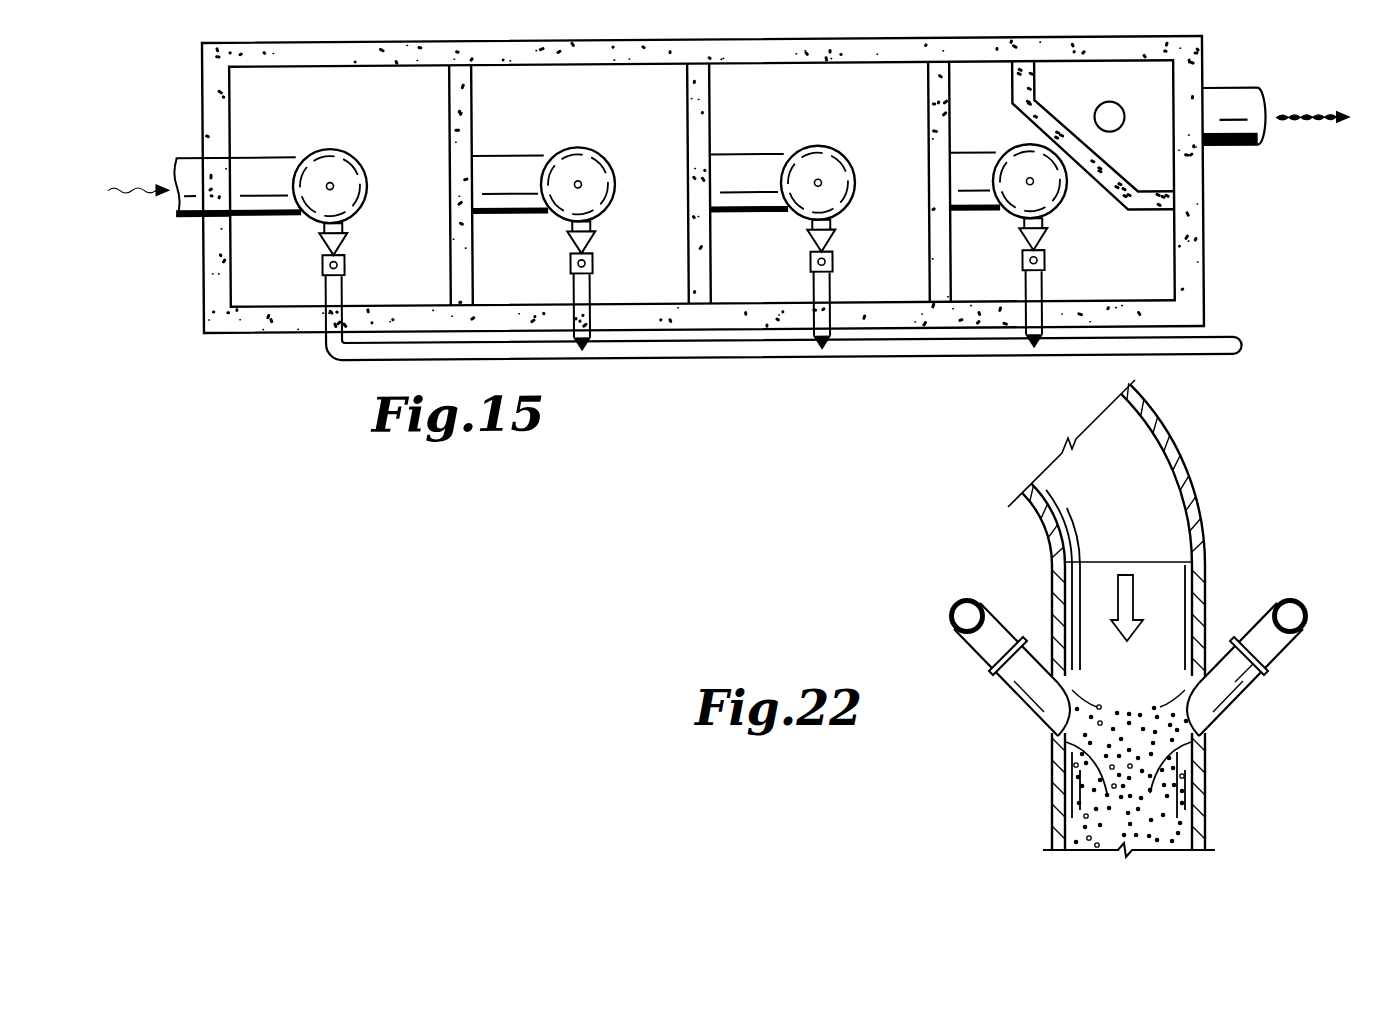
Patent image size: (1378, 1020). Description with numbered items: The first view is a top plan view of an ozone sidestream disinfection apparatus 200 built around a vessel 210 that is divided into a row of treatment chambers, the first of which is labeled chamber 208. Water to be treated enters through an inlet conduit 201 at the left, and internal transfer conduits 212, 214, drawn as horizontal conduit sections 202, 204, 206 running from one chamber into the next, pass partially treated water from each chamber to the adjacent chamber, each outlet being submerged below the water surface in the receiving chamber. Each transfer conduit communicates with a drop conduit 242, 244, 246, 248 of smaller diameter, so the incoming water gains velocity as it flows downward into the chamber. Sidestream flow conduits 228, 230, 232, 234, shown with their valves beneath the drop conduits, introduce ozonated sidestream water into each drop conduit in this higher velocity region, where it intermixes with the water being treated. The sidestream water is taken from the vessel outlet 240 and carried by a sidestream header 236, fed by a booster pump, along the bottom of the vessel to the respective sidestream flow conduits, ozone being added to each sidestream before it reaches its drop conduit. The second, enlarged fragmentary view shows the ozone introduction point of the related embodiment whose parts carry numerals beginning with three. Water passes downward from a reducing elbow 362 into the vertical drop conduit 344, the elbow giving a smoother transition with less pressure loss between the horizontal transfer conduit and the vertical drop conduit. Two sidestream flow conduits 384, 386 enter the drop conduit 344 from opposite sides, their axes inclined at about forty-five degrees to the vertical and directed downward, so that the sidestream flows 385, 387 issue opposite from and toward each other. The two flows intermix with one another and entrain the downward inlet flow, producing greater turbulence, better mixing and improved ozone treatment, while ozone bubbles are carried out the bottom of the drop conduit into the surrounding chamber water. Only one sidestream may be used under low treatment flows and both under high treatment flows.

In FIG. 15, the filtration system 200 is at (270, 364).
In FIG. 15, the inlet conduit 201 is at (185, 168).
In FIG. 15, the transfer conduit 202 is at (510, 144).
In FIG. 15, the transfer conduit 204 is at (738, 169).
In FIG. 15, the transfer conduit 206 is at (985, 145).
In FIG. 15, the first chamber 208 is at (253, 82).
In FIG. 15, the vessel 210 is at (490, 80).
In FIG. 15, the internal transfer conduit 212 is at (730, 82).
In FIG. 15, the internal transfer conduit 214 is at (968, 83).
In FIG. 15, the sidestream flow conduit 228 is at (344, 291).
In FIG. 15, the sidestream flow conduit 230 is at (590, 293).
In FIG. 15, the sidestream flow conduit 232 is at (830, 294).
In FIG. 15, the sidestream flow conduit 234 is at (1042, 296).
In FIG. 15, the sidestream header 236 is at (1213, 352).
In FIG. 15, the vessel outlet 240 is at (1222, 105).
In FIG. 15, the drop conduit 242 is at (359, 170).
In FIG. 15, the drop conduit 244 is at (607, 173).
In FIG. 15, the drop conduit 246 is at (846, 174).
In FIG. 15, the drop conduit 248 is at (1058, 211).
In FIG. 22, the drop conduit 344 is at (1208, 810).
In FIG. 22, the reducing elbow 362 is at (1180, 449).
In FIG. 22, the injection pipe 384 is at (972, 646).
In FIG. 22, the sidestream flow 385 is at (1066, 747).
In FIG. 22, the injection pipe 386 is at (1285, 646).
In FIG. 22, the sidestream flow 387 is at (1193, 745).